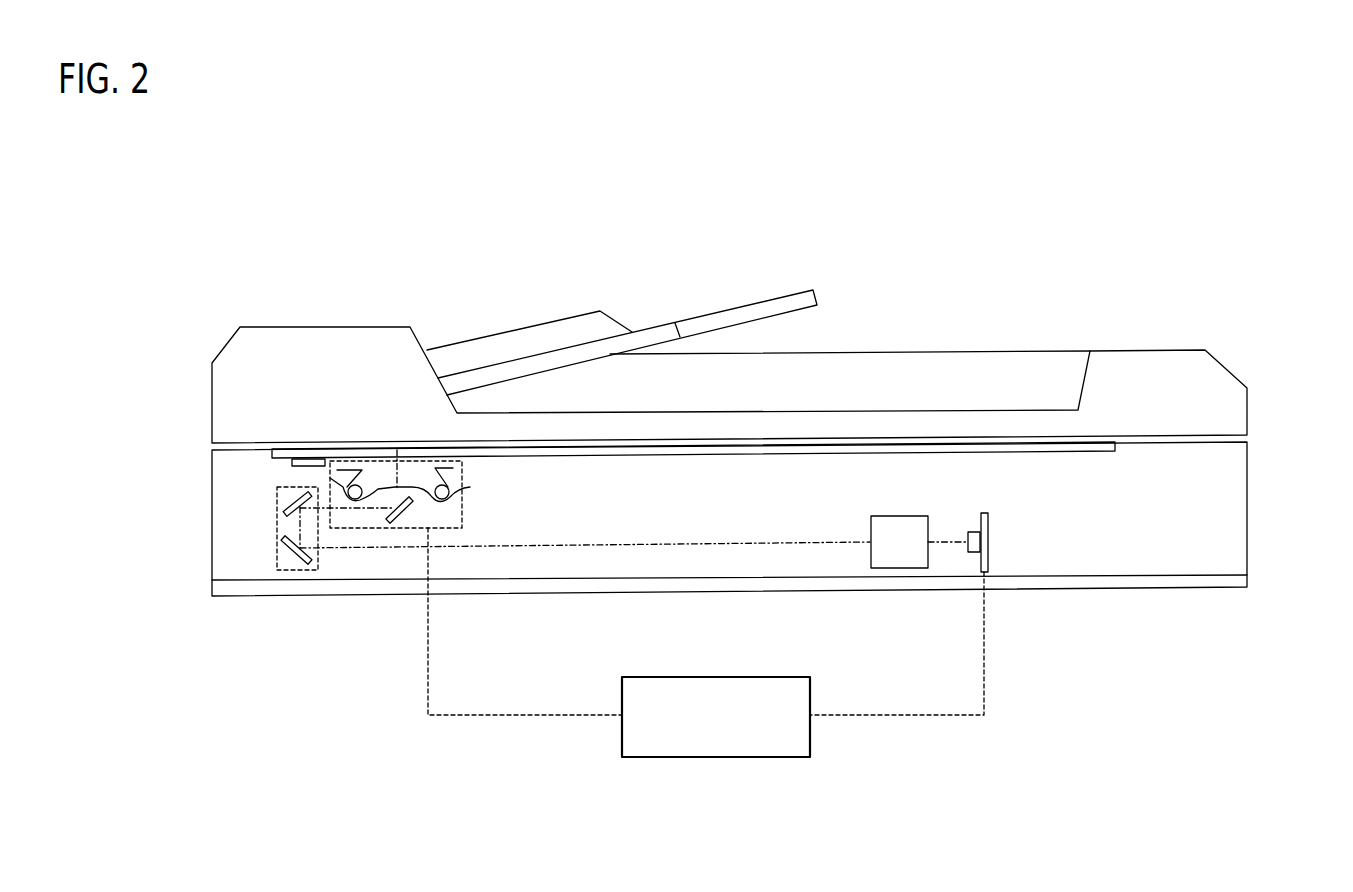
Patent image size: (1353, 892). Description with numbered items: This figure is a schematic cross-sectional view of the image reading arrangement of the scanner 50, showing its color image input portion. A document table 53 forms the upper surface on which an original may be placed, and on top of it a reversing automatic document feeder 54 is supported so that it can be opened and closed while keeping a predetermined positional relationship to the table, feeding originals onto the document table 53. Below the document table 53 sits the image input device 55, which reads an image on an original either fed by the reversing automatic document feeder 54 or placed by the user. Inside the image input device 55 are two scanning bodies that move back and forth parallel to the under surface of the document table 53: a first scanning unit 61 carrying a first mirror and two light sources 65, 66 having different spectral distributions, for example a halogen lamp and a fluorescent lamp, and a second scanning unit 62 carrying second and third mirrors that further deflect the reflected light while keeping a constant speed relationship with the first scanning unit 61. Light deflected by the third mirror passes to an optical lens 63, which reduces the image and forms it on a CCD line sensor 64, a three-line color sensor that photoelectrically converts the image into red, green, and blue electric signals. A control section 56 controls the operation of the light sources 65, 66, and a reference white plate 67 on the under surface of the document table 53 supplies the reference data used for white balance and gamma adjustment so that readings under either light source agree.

The scanner 50 is at (1008, 192).
The document table 53 is at (897, 443).
The reversing automatic document feeder 54 is at (1153, 410).
The image input device 55 is at (1147, 507).
The control section 56 is at (812, 747).
The first scanning unit 61 is at (390, 522).
The second scanning unit 62 is at (277, 525).
The optical lens 63 is at (905, 516).
The CCD line sensor 64 is at (989, 558).
The light source 65 is at (470, 487).
The light source 66 is at (330, 478).
The reference white plate 67 is at (312, 460).